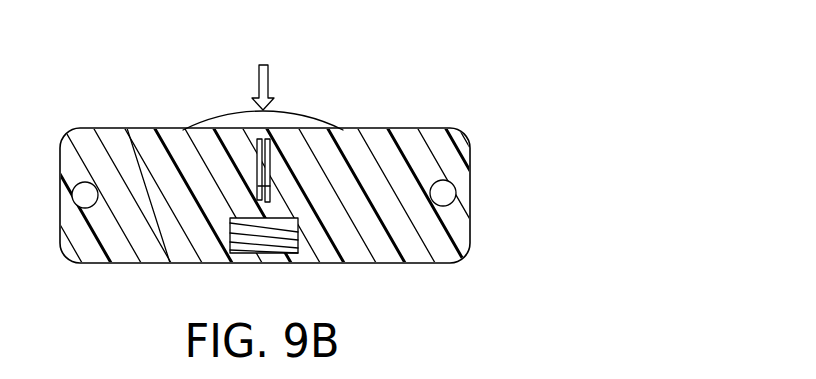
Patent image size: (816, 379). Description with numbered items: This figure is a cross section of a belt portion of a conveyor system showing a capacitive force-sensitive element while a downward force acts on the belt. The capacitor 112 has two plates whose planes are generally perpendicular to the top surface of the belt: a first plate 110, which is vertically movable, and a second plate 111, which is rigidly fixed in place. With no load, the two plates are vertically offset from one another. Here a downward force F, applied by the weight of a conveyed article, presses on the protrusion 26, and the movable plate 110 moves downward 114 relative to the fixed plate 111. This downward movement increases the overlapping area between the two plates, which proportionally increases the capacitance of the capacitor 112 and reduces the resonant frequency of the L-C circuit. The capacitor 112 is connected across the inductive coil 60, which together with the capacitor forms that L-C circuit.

The protrusion 26 is at (241, 112).
The downward force F is at (268, 82).
The downward movement 114 is at (253, 168).
The capacitor 112 is at (268, 139).
The first plate 110 is at (270, 186).
The second plate 111 is at (270, 190).
The inductive coil 60 is at (298, 252).